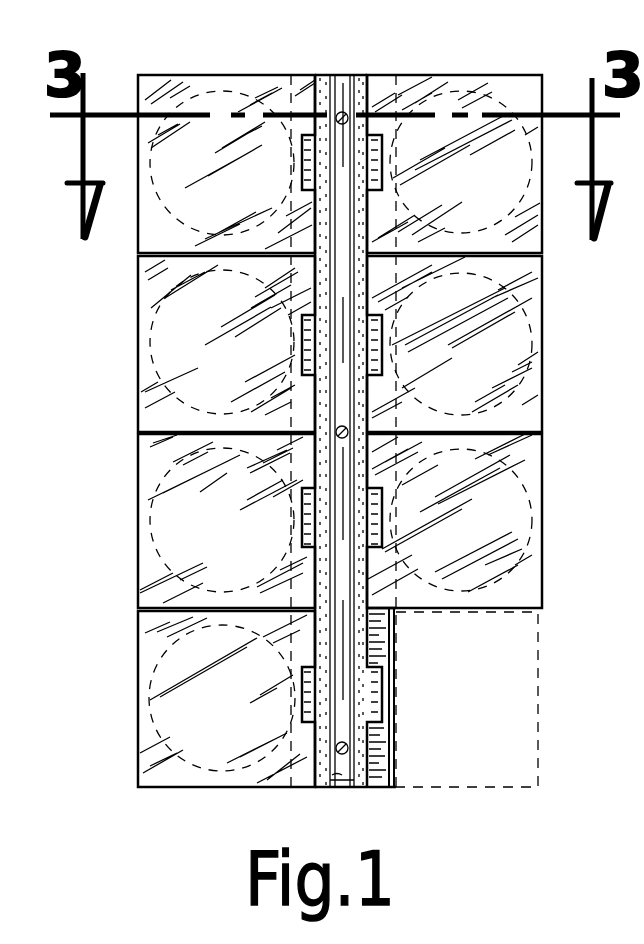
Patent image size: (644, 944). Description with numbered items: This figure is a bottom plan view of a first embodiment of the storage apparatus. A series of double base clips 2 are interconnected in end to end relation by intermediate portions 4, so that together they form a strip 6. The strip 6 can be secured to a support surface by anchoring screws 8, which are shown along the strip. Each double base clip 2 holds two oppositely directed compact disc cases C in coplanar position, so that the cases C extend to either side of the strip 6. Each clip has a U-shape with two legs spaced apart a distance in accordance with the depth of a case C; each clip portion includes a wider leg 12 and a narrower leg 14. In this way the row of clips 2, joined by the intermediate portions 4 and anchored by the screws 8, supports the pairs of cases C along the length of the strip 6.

The case C is at (134, 234).
The double base clip 2 is at (398, 510).
The intermediate portion 4 is at (370, 397).
The strip 6 is at (338, 776).
The anchoring screw 8 is at (348, 118).
The wider leg 12 is at (377, 762).
The narrower leg 14 is at (386, 318).